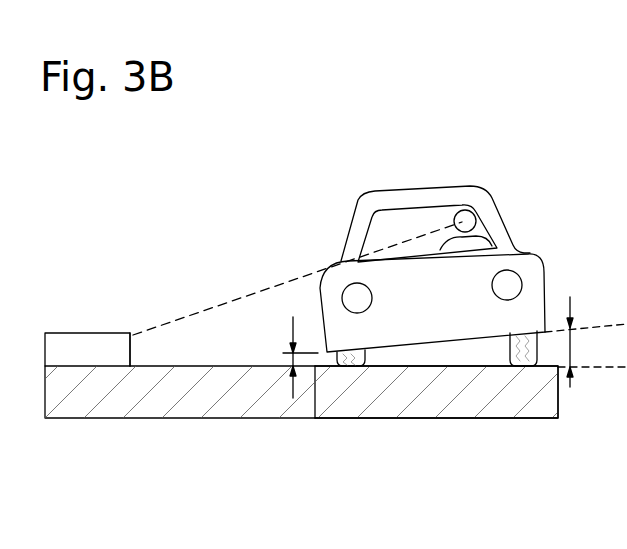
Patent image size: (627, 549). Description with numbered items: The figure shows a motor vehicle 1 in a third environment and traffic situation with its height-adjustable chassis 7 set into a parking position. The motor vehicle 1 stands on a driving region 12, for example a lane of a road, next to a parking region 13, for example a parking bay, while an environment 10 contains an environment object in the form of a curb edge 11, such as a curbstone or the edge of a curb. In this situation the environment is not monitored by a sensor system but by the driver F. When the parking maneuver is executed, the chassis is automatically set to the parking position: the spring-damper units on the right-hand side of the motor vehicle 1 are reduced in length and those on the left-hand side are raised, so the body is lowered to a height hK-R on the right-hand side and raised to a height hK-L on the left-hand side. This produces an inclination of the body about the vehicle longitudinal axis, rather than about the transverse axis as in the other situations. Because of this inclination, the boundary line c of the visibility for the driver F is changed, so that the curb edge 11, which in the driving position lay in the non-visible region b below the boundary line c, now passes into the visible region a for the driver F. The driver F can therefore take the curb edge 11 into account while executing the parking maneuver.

The motor vehicle 1 is at (436, 190).
The height-adjustable chassis 7 is at (487, 348).
The environment 10 is at (261, 210).
The curb edge 11 is at (134, 332).
The driving region 12 is at (393, 398).
The parking region 13 is at (122, 398).
The driver F is at (479, 220).
The visible region a is at (188, 283).
The non-visible region b is at (200, 308).
The boundary line of the visibility c is at (229, 284).
The height on the right-hand side hK-R is at (283, 399).
The height on the left-hand side hK-L is at (570, 388).